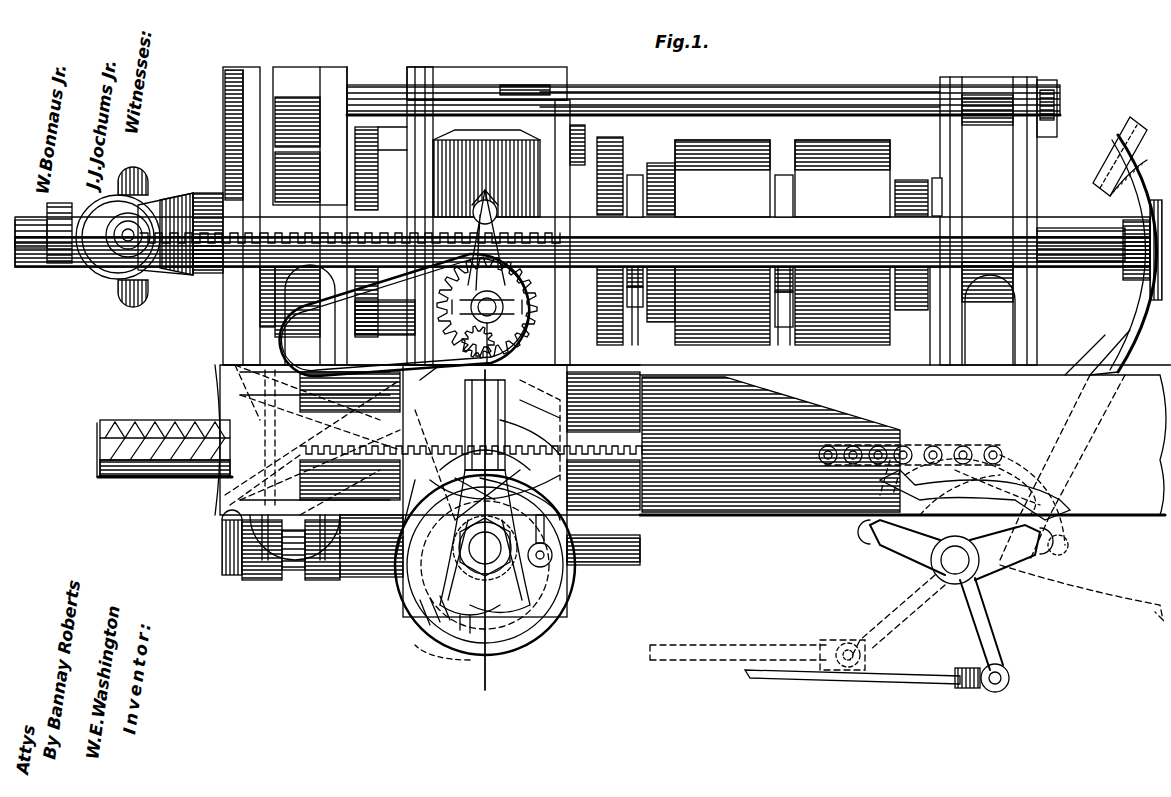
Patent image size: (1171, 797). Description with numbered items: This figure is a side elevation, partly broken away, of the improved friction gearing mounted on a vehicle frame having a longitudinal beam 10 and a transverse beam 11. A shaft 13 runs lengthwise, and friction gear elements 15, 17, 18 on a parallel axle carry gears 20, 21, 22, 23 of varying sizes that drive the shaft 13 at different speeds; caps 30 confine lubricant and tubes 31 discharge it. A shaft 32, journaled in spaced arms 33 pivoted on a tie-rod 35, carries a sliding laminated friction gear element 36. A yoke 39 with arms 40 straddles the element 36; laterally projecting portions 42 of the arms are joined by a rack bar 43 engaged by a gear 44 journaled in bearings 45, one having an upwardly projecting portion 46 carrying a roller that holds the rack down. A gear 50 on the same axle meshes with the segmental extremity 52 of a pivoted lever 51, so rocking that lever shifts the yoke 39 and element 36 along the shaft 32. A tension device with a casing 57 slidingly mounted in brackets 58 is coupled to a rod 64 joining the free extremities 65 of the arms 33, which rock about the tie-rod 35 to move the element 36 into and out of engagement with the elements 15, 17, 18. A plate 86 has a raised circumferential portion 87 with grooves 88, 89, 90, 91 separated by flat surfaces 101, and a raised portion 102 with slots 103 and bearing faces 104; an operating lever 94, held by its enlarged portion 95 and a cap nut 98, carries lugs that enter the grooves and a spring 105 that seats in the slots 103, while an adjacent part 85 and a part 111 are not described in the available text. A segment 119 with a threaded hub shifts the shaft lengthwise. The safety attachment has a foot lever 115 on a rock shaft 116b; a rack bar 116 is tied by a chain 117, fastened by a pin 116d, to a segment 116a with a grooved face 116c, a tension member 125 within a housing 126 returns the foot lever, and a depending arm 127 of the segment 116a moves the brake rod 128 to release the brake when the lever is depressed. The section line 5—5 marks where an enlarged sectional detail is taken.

The section line 5— 5 is at (498, 680).
The longitudinal beam 10 is at (1160, 378).
The transverse beam 11 is at (215, 374).
The shaft 13 is at (1105, 252).
The friction gear element 15 is at (388, 140).
The friction gear element 17 is at (725, 150).
The friction gear element 18 is at (840, 150).
The gear 20 is at (352, 136).
The gear 21 is at (620, 165).
The gear 22 is at (675, 190).
The gear 23 is at (910, 180).
The cap 30 is at (780, 175).
The discharge pipe 31 is at (645, 330).
The shaft 32 is at (232, 207).
The arm 33 is at (250, 140).
The tie-rod 35 is at (885, 93).
The friction gear element 36 is at (597, 103).
The yoke 39 is at (520, 55).
The yoke arm 40 is at (418, 140).
The laterally projecting portion 42 is at (484, 195).
The rack bar 43 is at (270, 215).
The gear 44 is at (345, 312).
The bearing 45 is at (540, 280).
The upwardly projecting portion 46 is at (585, 150).
The gear 50 is at (455, 340).
The lever 51 is at (400, 520).
The segmental extremity 52 is at (320, 290).
The casing 57 is at (300, 580).
The bracket 58 is at (230, 505).
The bar 64 is at (625, 560).
The free extremity 65 is at (255, 560).
The arc 85 is at (535, 460).
The plate 86 is at (575, 380).
The raised circumferential portion 87 is at (548, 612).
The groove 88 is at (500, 648).
The groove 89 is at (470, 660).
The groove 90 is at (460, 630).
The groove 91 is at (565, 475).
The operating lever 94 is at (445, 610).
The enlarged portion 95 is at (455, 570).
The cap nut 98 is at (465, 560).
The flat surface 101 is at (470, 605).
The raised portion 102 is at (565, 418).
The slot 103 is at (565, 436).
The bearing face 104 is at (565, 400).
The yielding member 105 is at (460, 400).
The roller 111 is at (545, 525).
The foot lever 115 is at (1100, 330).
The rack bar 116 is at (225, 495).
The segment 116a is at (895, 440).
The rock shaft 116b is at (930, 553).
The grooved face 116c is at (878, 478).
The pin 116d is at (1000, 455).
The flexible member 117 is at (850, 440).
The segment 119 is at (395, 560).
The tension member 125 is at (135, 475).
The housing 126 is at (145, 440).
The depending arm 127 is at (865, 615).
The brake rod 128 is at (760, 635).